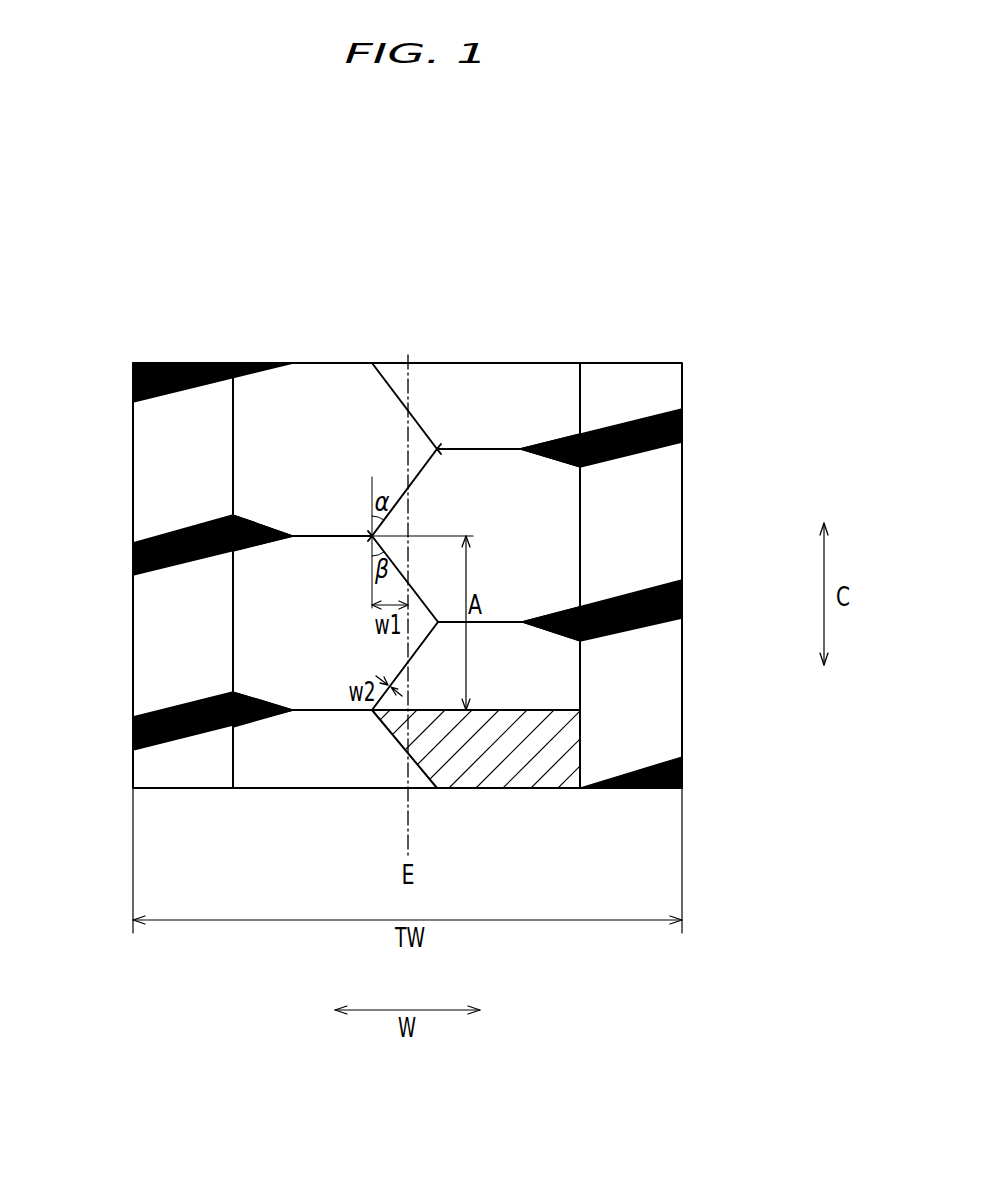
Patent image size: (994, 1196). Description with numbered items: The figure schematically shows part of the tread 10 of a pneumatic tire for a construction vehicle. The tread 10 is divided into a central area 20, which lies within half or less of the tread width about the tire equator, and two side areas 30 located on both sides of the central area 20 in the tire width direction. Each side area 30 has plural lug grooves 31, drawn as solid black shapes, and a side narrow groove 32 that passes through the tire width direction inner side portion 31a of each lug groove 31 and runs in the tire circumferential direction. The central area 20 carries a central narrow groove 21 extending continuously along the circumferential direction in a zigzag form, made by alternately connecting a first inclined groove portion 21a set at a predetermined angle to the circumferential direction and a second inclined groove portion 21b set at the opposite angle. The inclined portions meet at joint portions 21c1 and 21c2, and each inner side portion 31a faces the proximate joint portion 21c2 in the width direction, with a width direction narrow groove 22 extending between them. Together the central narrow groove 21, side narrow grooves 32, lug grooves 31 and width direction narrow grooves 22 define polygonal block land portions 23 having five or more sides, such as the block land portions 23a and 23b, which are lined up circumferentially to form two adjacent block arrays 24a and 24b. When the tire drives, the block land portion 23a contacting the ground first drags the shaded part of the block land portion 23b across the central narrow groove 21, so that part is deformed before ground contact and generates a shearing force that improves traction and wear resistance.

The tread 10 is at (270, 163).
The central area 20 is at (268, 235).
The side area 30 is at (268, 235).
The block array 24a is at (233, 292).
The block array 24b is at (580, 292).
The central narrow groove 21 is at (412, 602).
The first inclined groove portion 21a is at (412, 483).
The second inclined groove portion 21b is at (422, 420).
The joint portion 21c1 is at (372, 536).
The proximate joint portion 21c2 is at (437, 449).
The width direction narrow groove 22 is at (322, 535).
The polygonal block land portion 23 is at (255, 598).
The polygonal block land portion 23a is at (327, 398).
The polygonal block land portion 23b is at (422, 385).
The lug groove 31 is at (133, 553).
The tire width direction inner side portion 31a is at (260, 547).
The side narrow groove 32 is at (233, 425).